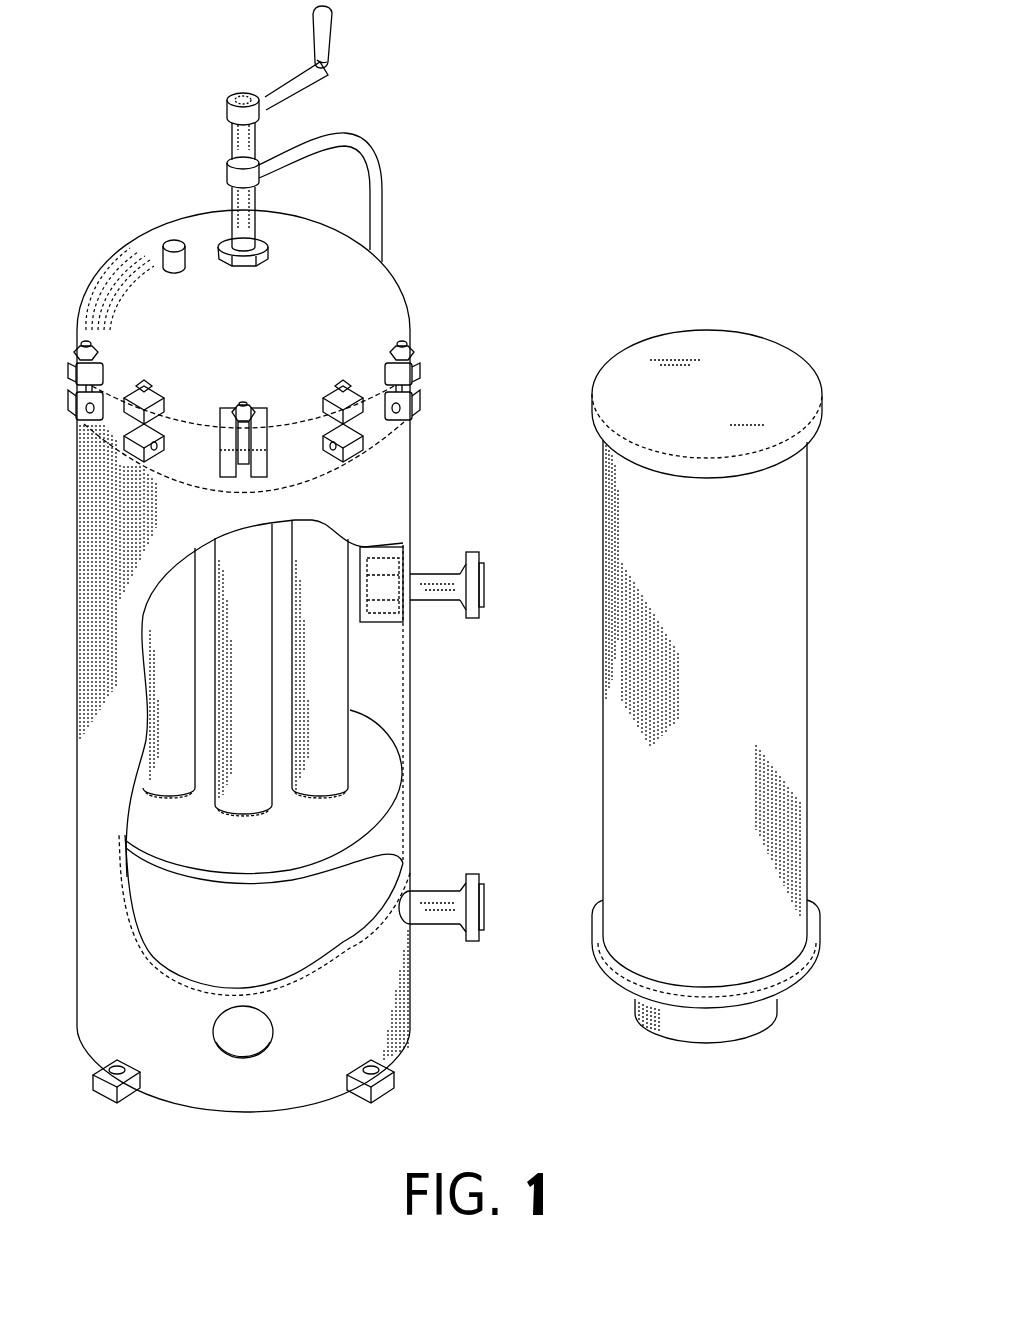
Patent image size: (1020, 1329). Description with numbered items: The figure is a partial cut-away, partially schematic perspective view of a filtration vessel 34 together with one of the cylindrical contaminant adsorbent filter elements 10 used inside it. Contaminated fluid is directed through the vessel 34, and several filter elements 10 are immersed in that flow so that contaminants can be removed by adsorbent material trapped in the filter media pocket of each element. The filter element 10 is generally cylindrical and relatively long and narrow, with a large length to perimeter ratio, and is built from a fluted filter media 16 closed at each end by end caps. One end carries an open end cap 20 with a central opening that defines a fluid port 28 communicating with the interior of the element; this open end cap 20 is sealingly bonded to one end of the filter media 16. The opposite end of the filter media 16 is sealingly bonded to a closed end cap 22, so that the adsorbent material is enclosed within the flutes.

The filter element 10 is at (340, 677).
The fluted filter media 16 is at (808, 668).
The open end cap 20 is at (821, 940).
The closed end cap 22 is at (822, 430).
The fluid port 28 is at (777, 1023).
The filtration vessel 34 is at (486, 257).